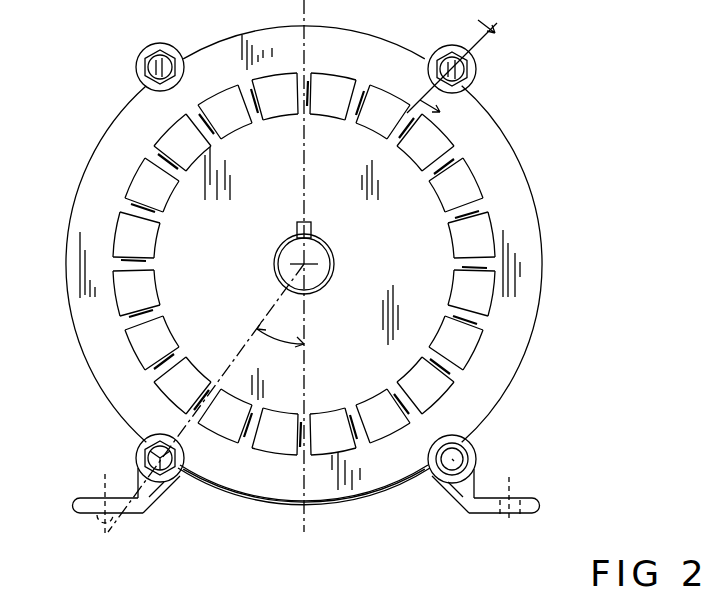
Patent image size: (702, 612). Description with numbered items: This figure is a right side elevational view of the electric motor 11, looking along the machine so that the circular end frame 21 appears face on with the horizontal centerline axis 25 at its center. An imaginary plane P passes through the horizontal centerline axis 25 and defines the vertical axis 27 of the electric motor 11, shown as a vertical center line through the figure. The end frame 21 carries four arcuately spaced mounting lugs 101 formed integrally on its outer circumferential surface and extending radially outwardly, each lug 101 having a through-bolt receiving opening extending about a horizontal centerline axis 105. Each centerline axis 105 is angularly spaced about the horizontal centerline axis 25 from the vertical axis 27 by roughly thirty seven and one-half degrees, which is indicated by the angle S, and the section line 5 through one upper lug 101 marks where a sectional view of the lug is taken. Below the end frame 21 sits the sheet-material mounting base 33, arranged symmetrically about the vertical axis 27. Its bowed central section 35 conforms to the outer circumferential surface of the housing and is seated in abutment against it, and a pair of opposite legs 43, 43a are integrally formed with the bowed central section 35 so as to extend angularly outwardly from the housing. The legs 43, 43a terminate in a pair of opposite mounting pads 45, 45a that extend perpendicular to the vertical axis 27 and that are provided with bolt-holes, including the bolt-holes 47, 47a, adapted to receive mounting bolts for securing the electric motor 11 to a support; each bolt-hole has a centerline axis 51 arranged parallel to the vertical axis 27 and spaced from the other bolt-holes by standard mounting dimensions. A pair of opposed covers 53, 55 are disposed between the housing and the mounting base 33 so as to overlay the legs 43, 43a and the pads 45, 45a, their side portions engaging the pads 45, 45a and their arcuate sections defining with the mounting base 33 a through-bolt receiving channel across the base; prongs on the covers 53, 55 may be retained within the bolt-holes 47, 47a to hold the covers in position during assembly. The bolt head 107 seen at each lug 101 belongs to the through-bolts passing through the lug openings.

The electric motor 11 is at (605, 78).
The end frame 21 is at (508, 160).
The horizontal centerline axis 25 is at (322, 246).
The vertical axis 27 is at (303, 11).
The imaginary plane P is at (305, 10).
The angle S is at (206, 398).
The section line 5 is at (462, 75).
The mounting base 33 is at (80, 12).
The bowed central section 35 is at (266, 500).
The leg 43 is at (160, 490).
The leg 43a is at (458, 492).
The mounting pad 45 is at (82, 514).
The mounting pad 45a is at (523, 514).
The bolt-hole 47 is at (101, 519).
The bolt-hole 47a is at (497, 523).
The centerline axis 51 is at (103, 496).
The cover 53 is at (138, 472).
The cover 55 is at (474, 476).
The mounting lug 101 is at (165, 45).
The centerline axis 105 is at (146, 447).
The bolt head 107 is at (150, 62).